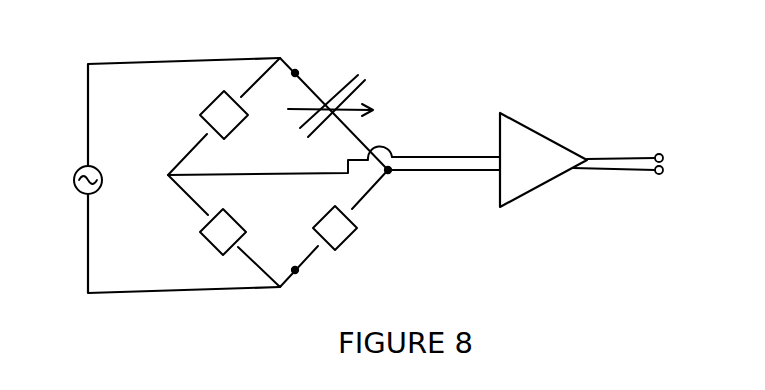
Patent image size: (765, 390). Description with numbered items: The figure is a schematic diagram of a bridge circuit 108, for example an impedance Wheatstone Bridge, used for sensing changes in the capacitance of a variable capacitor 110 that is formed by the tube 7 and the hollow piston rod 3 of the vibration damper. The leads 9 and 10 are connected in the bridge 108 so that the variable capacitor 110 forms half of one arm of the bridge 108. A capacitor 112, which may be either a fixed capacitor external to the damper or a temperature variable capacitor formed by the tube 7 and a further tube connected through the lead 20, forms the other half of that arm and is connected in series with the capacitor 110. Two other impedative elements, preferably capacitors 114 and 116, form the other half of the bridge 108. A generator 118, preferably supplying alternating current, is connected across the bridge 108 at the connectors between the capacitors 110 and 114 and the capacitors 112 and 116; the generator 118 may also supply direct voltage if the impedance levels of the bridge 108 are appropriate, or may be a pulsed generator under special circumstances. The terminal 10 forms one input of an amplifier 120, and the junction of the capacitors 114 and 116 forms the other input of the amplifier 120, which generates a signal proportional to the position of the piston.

The bridge circuit 108 is at (226, 31).
The lead 9 is at (296, 70).
The lead 10 is at (388, 172).
The lead 20 is at (297, 273).
The piston rod 3 is at (340, 90).
The tube 7 is at (366, 94).
The variable capacitor 110 is at (360, 82).
The capacitor 112 is at (349, 243).
The capacitor 114 is at (207, 105).
The capacitor 116 is at (207, 248).
The generator 118 is at (99, 168).
The amplifier 120 is at (531, 126).